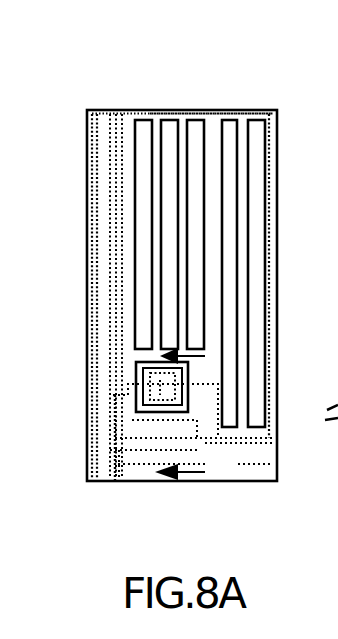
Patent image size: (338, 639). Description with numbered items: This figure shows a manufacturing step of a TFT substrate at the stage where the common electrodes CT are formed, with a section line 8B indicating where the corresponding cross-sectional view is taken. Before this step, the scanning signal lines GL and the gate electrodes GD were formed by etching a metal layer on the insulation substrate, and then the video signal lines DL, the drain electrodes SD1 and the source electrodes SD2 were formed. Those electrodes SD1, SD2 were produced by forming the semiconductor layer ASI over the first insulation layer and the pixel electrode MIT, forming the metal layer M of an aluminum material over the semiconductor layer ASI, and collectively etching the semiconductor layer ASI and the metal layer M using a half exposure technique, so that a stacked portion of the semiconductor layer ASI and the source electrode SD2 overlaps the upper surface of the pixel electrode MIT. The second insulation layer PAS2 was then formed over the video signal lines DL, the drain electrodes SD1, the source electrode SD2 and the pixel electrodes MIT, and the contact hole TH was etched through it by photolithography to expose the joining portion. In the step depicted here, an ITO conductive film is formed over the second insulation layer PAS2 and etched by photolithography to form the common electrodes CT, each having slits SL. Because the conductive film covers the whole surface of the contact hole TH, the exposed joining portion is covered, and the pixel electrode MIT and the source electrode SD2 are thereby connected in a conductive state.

The slit SL is at (141, 120).
The second insulation layer PAS2 is at (190, 110).
The common electrode CT is at (208, 128).
The pixel electrode MIT is at (256, 192).
The contact hole TH is at (157, 375).
The video signal line DL is at (88, 203).
The metal layer M is at (88, 262).
The semiconductor layer ASI is at (88, 307).
The drain electrode SD1 is at (133, 455).
The source electrode SD2 is at (230, 413).
The gate electrode GD is at (250, 440).
The scanning signal line GL is at (247, 465).
The line 8B- 8B is at (194, 414).